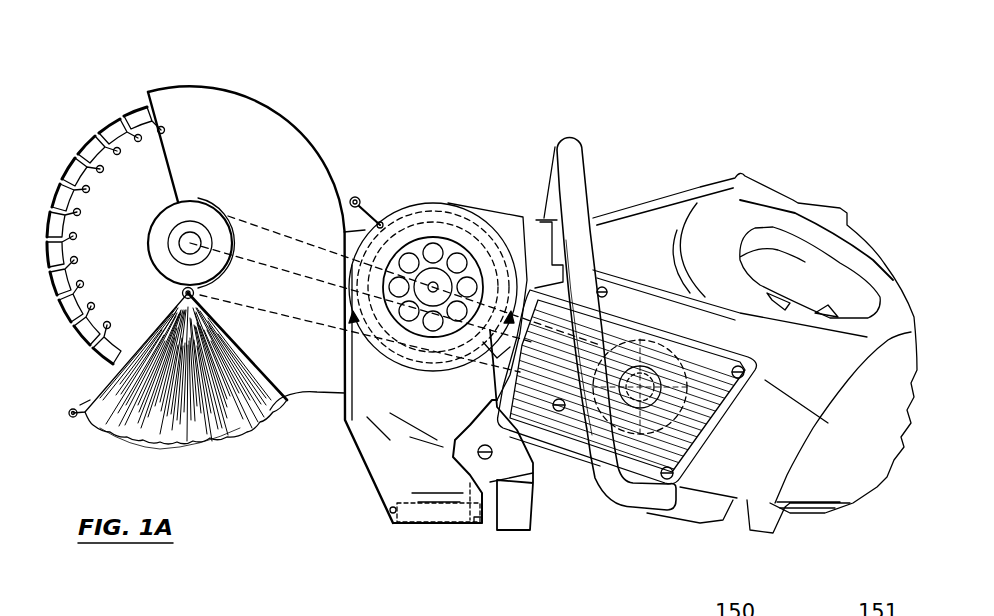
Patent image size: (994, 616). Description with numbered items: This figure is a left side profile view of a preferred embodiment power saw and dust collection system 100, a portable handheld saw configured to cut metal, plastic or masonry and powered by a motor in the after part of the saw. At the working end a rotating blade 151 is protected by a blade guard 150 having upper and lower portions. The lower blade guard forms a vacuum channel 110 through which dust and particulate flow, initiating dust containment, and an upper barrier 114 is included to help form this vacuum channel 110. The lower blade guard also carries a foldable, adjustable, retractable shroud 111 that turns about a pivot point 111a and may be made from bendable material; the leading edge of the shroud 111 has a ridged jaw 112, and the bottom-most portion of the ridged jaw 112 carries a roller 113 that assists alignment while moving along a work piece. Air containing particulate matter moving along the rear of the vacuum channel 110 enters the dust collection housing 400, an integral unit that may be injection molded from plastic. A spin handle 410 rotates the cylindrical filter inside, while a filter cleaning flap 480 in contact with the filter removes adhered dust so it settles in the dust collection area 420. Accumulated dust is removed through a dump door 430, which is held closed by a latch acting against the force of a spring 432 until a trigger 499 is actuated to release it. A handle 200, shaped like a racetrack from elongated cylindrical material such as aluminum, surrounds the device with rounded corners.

The power saw and dust collection system 100 is at (488, 55).
The vacuum channel 110 is at (287, 367).
The shroud 111 is at (233, 405).
The pivot point 111a is at (178, 312).
The ridged jaw 112 is at (82, 410).
The roller 113 is at (73, 416).
The upper barrier 114 is at (232, 306).
The blade guard 150 is at (278, 135).
The rotating blade 151 is at (108, 150).
The handle 200 is at (585, 143).
The dust collection housing 400 is at (447, 202).
The spin handle 410 is at (462, 262).
The dust collection area 420 is at (420, 473).
The dump door 430 is at (432, 527).
The spring 432 is at (478, 522).
The filter cleaning flap 480 is at (490, 335).
The trigger 499 is at (366, 200).